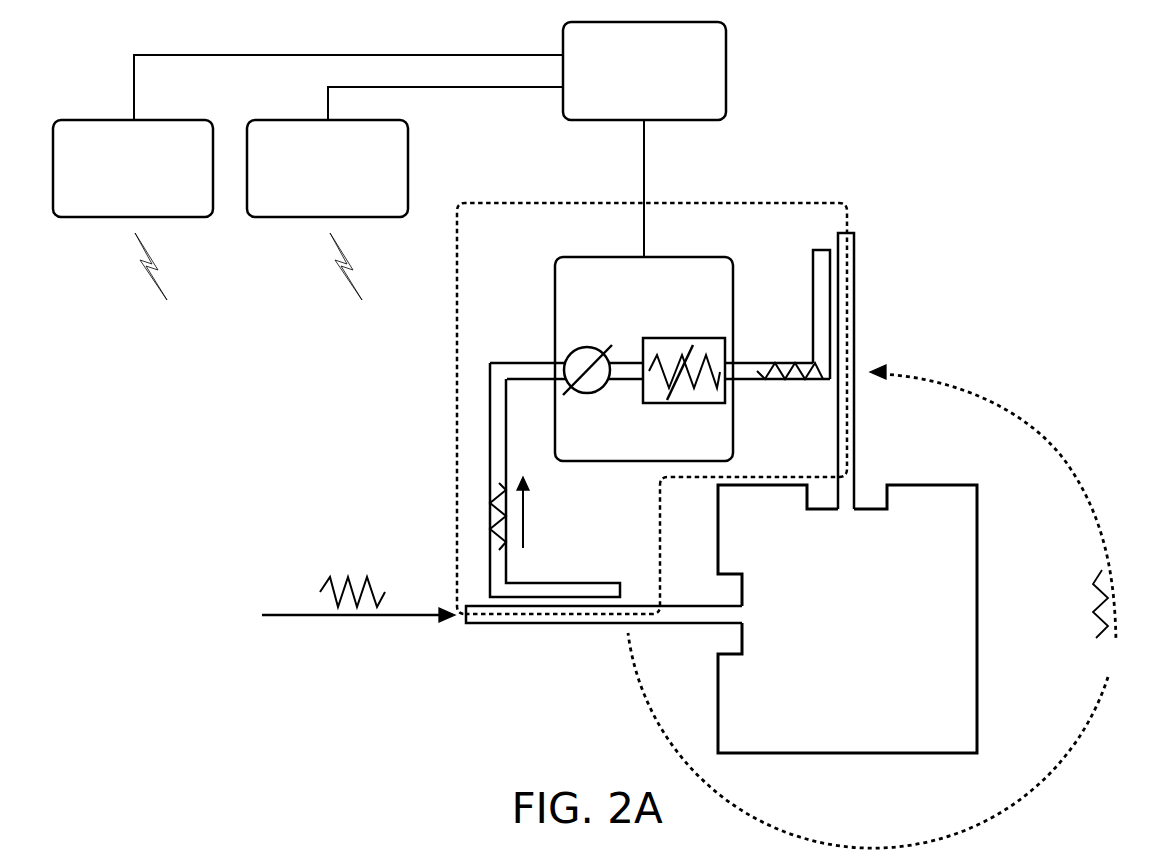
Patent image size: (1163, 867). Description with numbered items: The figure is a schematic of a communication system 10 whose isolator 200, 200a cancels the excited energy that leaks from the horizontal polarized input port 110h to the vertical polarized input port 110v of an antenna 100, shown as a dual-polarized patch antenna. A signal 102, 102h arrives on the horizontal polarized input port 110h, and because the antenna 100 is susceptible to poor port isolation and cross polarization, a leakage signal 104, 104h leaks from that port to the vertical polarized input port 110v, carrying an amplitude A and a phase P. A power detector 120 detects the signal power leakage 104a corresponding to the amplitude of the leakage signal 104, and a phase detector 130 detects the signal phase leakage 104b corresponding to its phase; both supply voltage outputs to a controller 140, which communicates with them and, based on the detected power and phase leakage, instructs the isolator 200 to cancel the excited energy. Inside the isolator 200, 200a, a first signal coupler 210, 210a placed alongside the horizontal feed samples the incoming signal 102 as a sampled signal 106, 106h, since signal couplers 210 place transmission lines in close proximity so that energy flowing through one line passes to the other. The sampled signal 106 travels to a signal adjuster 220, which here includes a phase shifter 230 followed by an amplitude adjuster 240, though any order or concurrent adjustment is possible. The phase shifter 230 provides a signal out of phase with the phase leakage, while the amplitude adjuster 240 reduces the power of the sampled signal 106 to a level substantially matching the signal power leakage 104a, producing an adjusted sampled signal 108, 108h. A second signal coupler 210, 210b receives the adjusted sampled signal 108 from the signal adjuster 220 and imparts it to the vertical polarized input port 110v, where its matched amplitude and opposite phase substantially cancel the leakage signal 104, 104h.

The communication system 10 is at (933, 74).
The antenna 100 is at (977, 516).
The signal 102 is at (345, 559).
The signal received on the horizontal polarized input port 102h is at (348, 577).
The leakage signal 104 is at (887, 606).
The signal power leakage 104a is at (167, 266).
The signal phase leakage 104b is at (363, 266).
The leakage signal from the horizontal polarized input port 104h is at (1055, 448).
The sampled signal 106 is at (501, 528).
The sampled horizontal signal 106h is at (492, 514).
The adjusted sampled signal 108 is at (786, 379).
The adjusted sampled horizontal signal 108h is at (785, 363).
The horizontal polarized input port 110h is at (573, 625).
The vertical polarized input port 110v is at (857, 315).
The power detector 120 is at (133, 168).
The phase detector 130 is at (327, 168).
The controller 140 is at (430, 139).
The isolator 200 is at (622, 408).
The isolator 200a is at (622, 408).
The signal coupler 210 is at (660, 407).
The first signal coupler 210a is at (572, 582).
The second signal coupler 210b is at (813, 282).
The signal adjuster 220 is at (660, 359).
The phase shifter 230 is at (587, 346).
The amplitude adjuster 240 is at (683, 338).